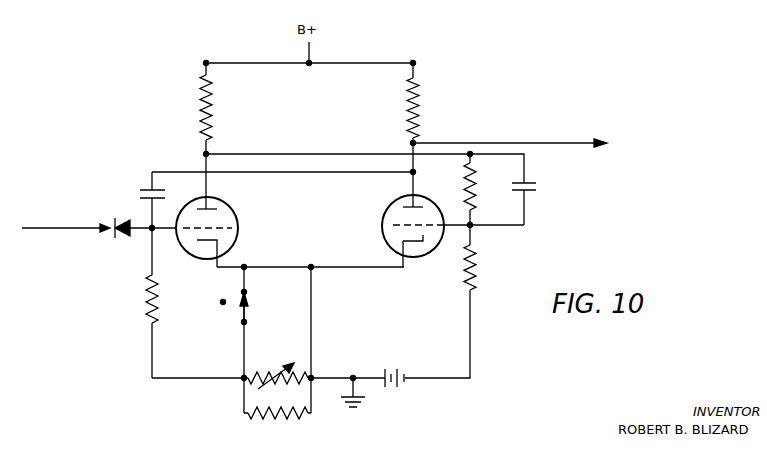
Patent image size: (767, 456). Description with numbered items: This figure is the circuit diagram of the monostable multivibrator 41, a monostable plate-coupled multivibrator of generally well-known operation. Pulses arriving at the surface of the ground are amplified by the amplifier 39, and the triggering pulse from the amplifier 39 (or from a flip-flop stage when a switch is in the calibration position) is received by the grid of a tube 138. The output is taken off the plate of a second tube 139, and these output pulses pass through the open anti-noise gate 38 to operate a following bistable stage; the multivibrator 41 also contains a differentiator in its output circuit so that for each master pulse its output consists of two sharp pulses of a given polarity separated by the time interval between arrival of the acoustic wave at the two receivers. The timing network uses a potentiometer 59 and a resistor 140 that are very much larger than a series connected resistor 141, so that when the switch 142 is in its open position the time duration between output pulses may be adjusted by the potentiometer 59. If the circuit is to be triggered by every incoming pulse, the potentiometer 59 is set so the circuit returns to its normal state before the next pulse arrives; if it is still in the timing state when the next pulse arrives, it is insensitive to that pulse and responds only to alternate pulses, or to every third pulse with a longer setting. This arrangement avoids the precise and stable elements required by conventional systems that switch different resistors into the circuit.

The monostable multivibrator 41 is at (173, 145).
The amplifier 39 is at (66, 231).
The anti-noise gate 38 is at (550, 142).
The tube 138 is at (239, 229).
The tube 139 is at (386, 208).
The series connected resistor 141 is at (146, 292).
The switch 142 is at (248, 311).
The potentiometer 59 is at (274, 368).
The resistor 140 is at (293, 418).